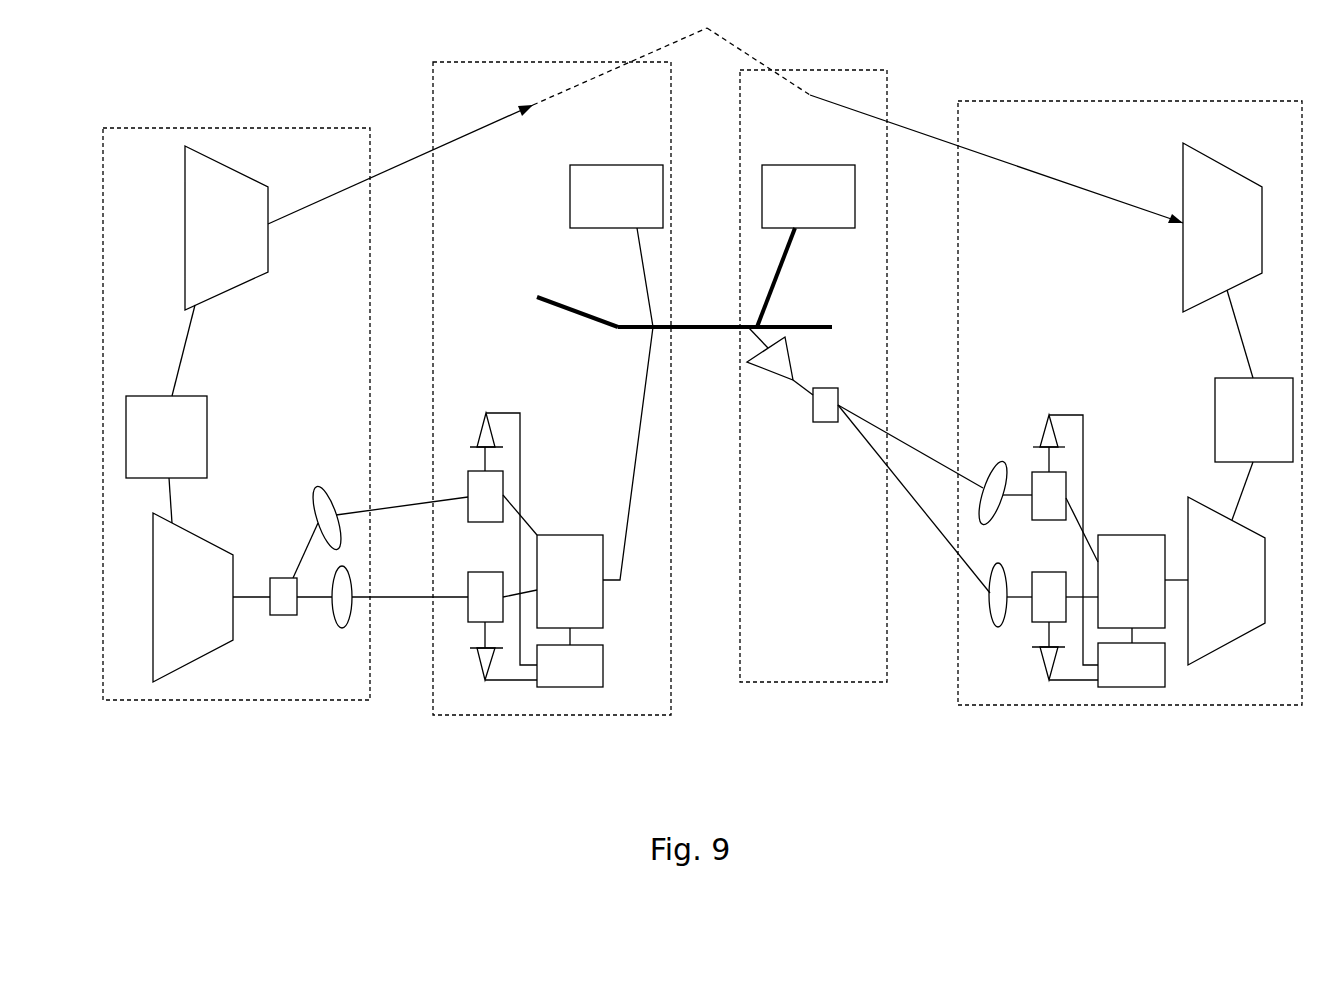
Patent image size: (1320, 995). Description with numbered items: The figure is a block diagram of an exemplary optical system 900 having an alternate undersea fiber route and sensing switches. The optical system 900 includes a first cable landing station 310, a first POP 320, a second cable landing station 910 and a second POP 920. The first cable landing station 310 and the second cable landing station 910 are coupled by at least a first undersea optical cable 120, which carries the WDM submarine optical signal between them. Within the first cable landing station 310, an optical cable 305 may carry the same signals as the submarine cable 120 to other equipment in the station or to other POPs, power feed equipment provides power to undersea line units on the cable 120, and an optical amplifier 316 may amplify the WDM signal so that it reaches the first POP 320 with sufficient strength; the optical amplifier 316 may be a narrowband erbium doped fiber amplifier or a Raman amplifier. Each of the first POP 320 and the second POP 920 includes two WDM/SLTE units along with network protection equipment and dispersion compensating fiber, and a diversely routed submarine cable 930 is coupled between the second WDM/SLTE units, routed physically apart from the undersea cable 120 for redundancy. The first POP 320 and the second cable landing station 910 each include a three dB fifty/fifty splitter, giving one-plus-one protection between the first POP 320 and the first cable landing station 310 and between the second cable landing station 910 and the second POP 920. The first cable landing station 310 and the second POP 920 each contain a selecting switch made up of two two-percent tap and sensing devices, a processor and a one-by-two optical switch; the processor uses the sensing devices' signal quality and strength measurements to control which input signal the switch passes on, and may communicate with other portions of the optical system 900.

The optical system 900 is at (1086, 770).
The diversely routed submarine cable 930 is at (710, 30).
The first POP 320 is at (233, 700).
The first cable landing station 310 is at (500, 716).
The second cable landing station 910 is at (778, 683).
The second POP 920 is at (960, 707).
The optical cable 305 is at (537, 297).
The undersea cable 120 is at (683, 330).
The optical amplifier 316 is at (753, 362).